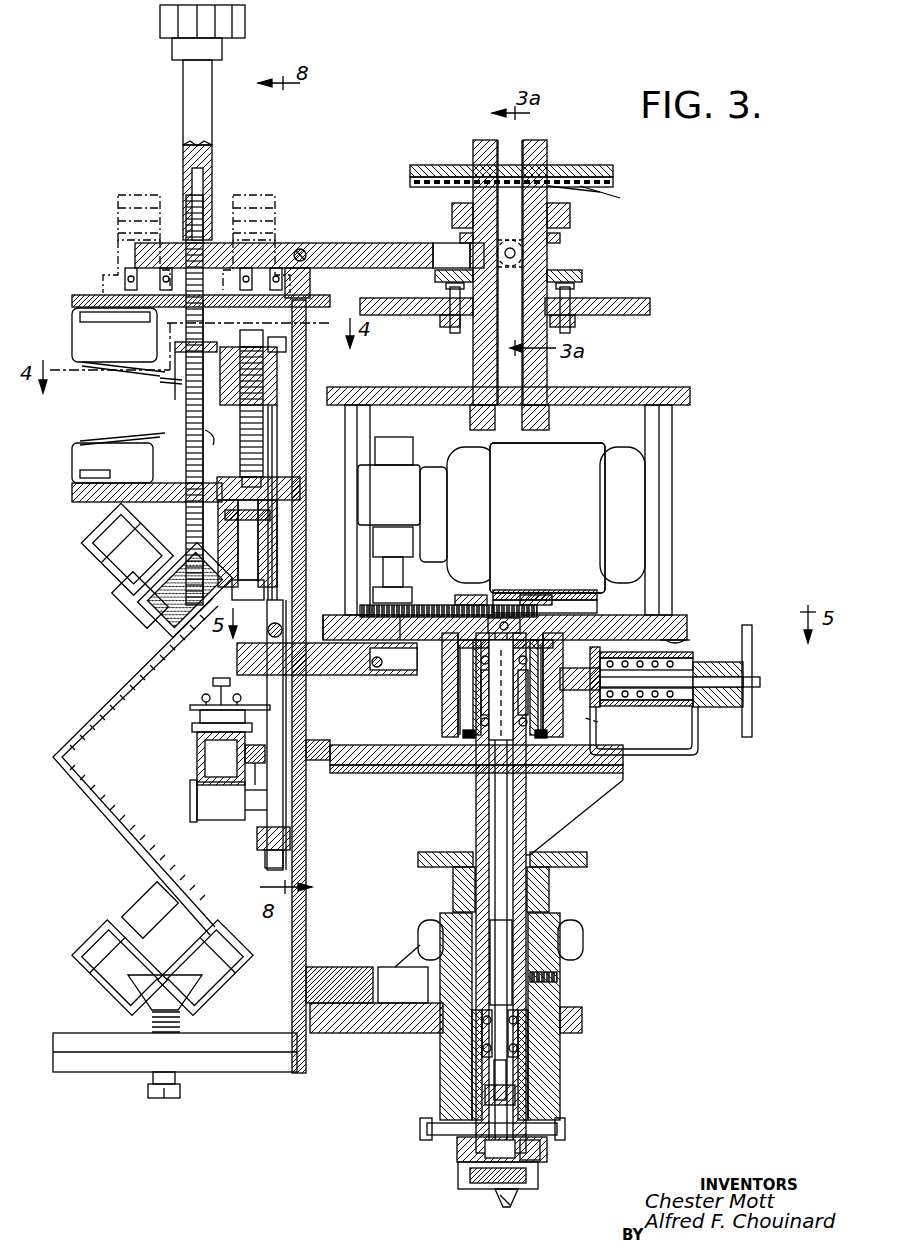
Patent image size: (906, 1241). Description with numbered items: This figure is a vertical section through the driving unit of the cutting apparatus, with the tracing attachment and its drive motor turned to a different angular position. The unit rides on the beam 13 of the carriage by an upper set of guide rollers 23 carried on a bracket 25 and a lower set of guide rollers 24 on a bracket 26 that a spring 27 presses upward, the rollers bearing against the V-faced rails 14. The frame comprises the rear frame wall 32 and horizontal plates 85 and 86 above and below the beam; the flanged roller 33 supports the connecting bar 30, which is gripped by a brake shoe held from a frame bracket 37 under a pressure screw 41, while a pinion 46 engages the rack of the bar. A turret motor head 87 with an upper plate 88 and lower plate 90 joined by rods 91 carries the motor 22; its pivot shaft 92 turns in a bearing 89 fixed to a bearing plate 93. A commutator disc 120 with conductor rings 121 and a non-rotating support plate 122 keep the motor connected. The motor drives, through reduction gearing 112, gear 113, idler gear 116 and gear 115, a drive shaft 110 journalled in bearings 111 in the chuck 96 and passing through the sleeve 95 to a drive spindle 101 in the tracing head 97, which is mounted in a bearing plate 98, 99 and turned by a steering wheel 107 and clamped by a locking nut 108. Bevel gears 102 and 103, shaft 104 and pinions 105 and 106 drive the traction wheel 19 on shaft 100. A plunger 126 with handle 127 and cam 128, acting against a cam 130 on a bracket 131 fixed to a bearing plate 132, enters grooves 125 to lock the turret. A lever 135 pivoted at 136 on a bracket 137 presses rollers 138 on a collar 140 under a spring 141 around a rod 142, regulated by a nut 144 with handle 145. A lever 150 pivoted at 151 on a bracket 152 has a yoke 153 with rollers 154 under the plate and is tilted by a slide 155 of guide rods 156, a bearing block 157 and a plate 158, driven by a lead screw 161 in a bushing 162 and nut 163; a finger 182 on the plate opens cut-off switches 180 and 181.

The beam 13 is at (112, 832).
The rails 14 is at (155, 625).
The traction wheel 19 is at (500, 1200).
The motor 22 is at (593, 468).
The upper set of guide rollers 23 is at (208, 548).
The lower set of guide rollers 24 is at (96, 984).
The bracket 25 is at (122, 527).
The bracket 26 is at (198, 1019).
The spring 27 is at (150, 1025).
The connecting piece 30 is at (197, 752).
The rear frame wall 32 is at (292, 935).
The flanged roller 33 is at (190, 800).
The frame bracket 37 is at (190, 707).
The pressure screw 41 is at (213, 682).
The pinion 46 is at (250, 800).
The frame plate 85 is at (72, 493).
The frame plate 86 is at (58, 1048).
The turret motor head 87 is at (680, 615).
The upper horizontal plate 88 is at (676, 390).
The bearing 89 is at (462, 328).
The lower horizontal plate 90 is at (688, 628).
The rods 91 is at (365, 414).
The pivot shaft 92 is at (548, 380).
The bearing plate 93 is at (650, 308).
The sleeve 95 is at (526, 822).
The chuck 96 is at (442, 733).
The tracing head 97 is at (440, 1080).
The bearing plate 98 is at (380, 1035).
The semi-circular bearing plate 99 is at (582, 1022).
The horizontal shaft 100 is at (540, 1175).
The drive spindle 101 is at (560, 990).
The bevel gear 102 is at (520, 1112).
The bevel gear 103 is at (470, 1150).
The horizontal shaft 104 is at (450, 1125).
The pinion 105 is at (548, 1155).
The pinion 106 is at (515, 1205).
The steering wheel 107 is at (433, 930).
The locking nut 108 is at (452, 885).
The drive shaft 110 is at (500, 822).
The bearings 111 is at (478, 742).
The reduction gearing 112 is at (405, 480).
The gear 113 is at (415, 606).
The gear 115 is at (528, 606).
The idler gear 116 is at (472, 604).
The disc 120 is at (598, 158).
The conductor rings 121 is at (575, 188).
The support plate 122 is at (572, 222).
The grooves 125 is at (440, 722).
The plunger 126 is at (760, 684).
The turning handle 127 is at (752, 730).
The cam 128 is at (726, 656).
The cam 130 is at (712, 710).
The bracket 131 is at (698, 755).
The bearing plate 132 is at (383, 773).
The lever 135 is at (362, 243).
The pivot 136 is at (303, 250).
The bracket 137 is at (311, 283).
The rollers 138 is at (548, 262).
The collar 140 is at (582, 278).
The spring 141 is at (186, 410).
The rod 142 is at (221, 450).
The pressure regulating nut 144 is at (183, 100).
The handle 145 is at (160, 20).
The lever 150 is at (388, 676).
The pivot 151 is at (342, 622).
The bracket 152 is at (340, 676).
The yoke 153 is at (415, 678).
The rollers 154 is at (598, 720).
The slide 155 is at (265, 630).
The guide rods 156 is at (278, 430).
The bearing block 157 is at (262, 851).
The plate 158 is at (307, 348).
The lead screw 161 is at (263, 460).
The bushing 162 is at (277, 520).
The nut 163 is at (300, 366).
The cut-off switch 180 is at (85, 330).
The cut-off switch 181 is at (75, 458).
The finger 182 is at (172, 384).